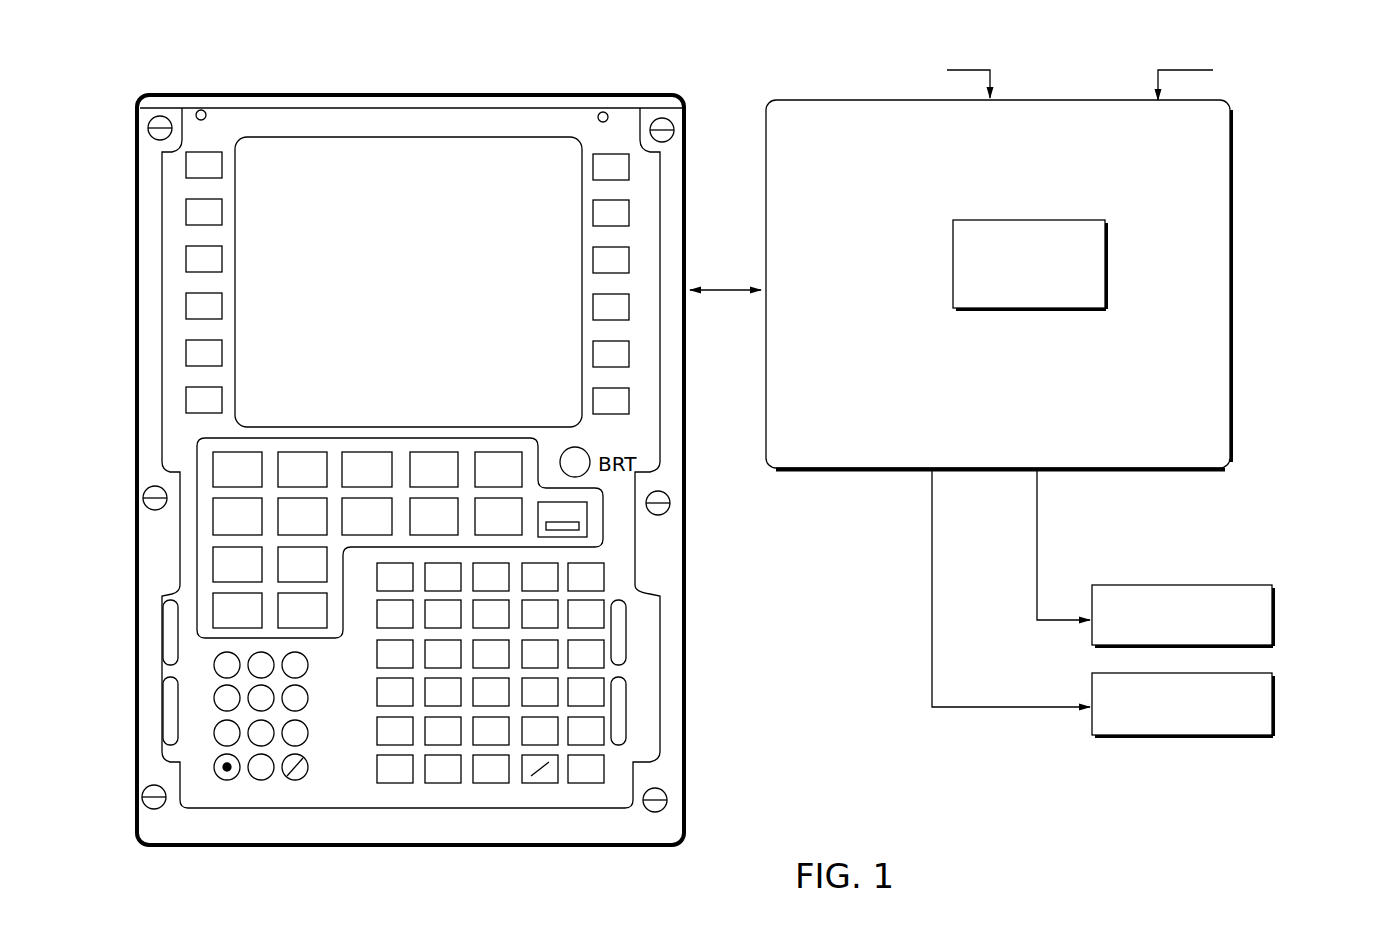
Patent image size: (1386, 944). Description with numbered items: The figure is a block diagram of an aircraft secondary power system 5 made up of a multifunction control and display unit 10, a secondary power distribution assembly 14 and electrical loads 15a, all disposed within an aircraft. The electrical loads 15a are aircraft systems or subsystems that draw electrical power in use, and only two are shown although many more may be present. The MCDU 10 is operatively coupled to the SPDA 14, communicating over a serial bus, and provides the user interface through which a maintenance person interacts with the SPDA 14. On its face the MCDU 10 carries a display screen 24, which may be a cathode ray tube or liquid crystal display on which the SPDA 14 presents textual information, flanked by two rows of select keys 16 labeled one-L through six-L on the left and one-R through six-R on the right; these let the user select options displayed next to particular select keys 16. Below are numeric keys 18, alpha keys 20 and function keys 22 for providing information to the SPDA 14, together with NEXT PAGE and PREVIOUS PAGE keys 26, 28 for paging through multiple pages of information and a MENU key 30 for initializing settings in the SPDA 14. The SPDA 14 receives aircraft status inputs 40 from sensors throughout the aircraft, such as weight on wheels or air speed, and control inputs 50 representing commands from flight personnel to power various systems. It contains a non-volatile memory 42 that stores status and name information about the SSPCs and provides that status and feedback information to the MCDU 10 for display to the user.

The aircraft secondary power system 5 is at (705, 85).
The multifunction control and display unit (MCDU) 10 is at (474, 93).
The secondary power distribution assembly (SPDA) 14 is at (1231, 183).
The electrical load 15a is at (1232, 585).
The select keys 16 is at (160, 208).
The numeric keys 18 is at (269, 792).
The alpha keys 20 is at (357, 739).
The function keys 22 is at (165, 548).
The display screen 24 is at (420, 292).
The NEXT PAGE key 26 is at (350, 559).
The PREVIOUS PAGE key 28 is at (213, 605).
The MENU key 30 is at (215, 465).
The aircraft status inputs 40 is at (952, 57).
The non-volatile memory (NVM) 42 is at (1073, 221).
The control inputs 50 is at (1280, 104).